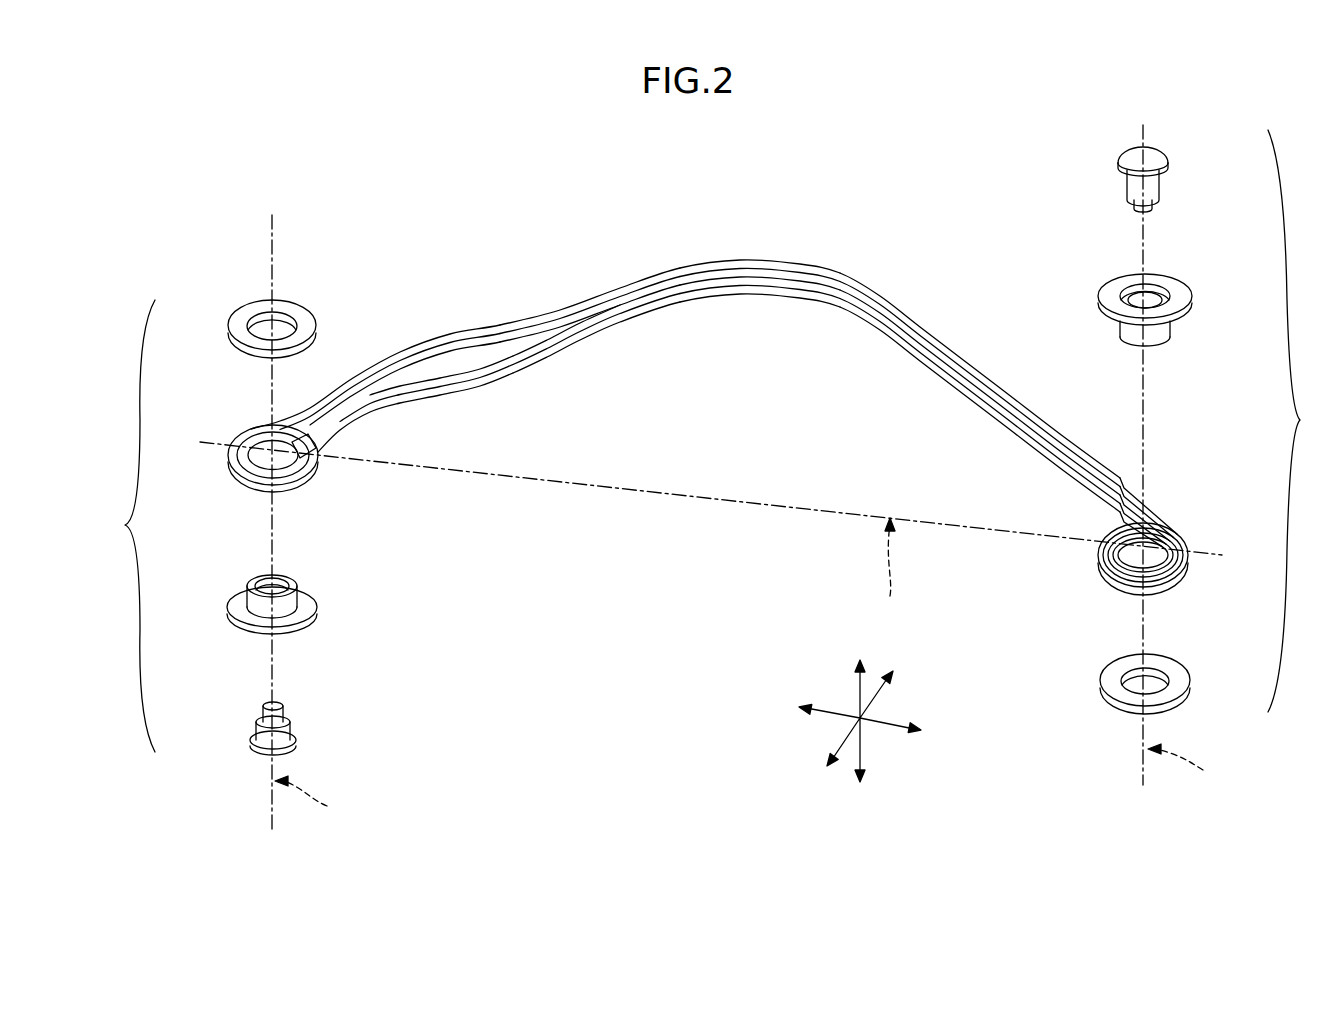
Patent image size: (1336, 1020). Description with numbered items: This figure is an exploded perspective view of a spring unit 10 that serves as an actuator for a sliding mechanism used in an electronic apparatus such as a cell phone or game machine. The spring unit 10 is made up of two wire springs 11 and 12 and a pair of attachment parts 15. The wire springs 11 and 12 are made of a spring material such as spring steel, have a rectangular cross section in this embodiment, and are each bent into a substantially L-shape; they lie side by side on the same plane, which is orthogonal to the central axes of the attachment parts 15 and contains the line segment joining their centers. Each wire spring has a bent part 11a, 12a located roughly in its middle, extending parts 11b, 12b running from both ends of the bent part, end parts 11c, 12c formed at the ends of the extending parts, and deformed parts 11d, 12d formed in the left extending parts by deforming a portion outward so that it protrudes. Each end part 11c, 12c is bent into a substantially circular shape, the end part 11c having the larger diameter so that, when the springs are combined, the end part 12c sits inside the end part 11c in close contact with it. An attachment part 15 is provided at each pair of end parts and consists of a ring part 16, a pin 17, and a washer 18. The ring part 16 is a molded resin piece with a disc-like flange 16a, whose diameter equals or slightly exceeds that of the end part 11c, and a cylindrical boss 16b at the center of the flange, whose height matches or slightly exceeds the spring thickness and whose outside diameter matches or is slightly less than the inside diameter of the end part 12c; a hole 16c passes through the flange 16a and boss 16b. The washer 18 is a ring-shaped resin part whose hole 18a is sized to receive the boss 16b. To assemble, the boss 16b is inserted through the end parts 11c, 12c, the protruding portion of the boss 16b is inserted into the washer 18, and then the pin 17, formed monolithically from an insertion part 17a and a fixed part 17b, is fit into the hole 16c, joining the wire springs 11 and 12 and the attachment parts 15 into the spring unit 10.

The spring unit 10 is at (980, 109).
The wire spring 11 is at (882, 292).
The bent part 11a is at (742, 258).
The extending part 11b is at (592, 297).
The end part 11c is at (262, 488).
The deformed part 11d is at (418, 337).
The wire spring 12 is at (862, 335).
The bent part 12a is at (744, 300).
The extending part 12b is at (618, 318).
The end part 12c is at (316, 456).
The deformed part 12d is at (466, 393).
The attachment part 15 is at (708, 441).
The ring part 16 is at (228, 607).
The flange 16a is at (308, 606).
The boss 16b is at (298, 594).
The hole 16c is at (285, 585).
The pin 17 is at (250, 745).
The insertion part 17a is at (287, 742).
The fixed part 17b is at (285, 714).
The washer 18 is at (224, 333).
The hole 18a is at (290, 324).